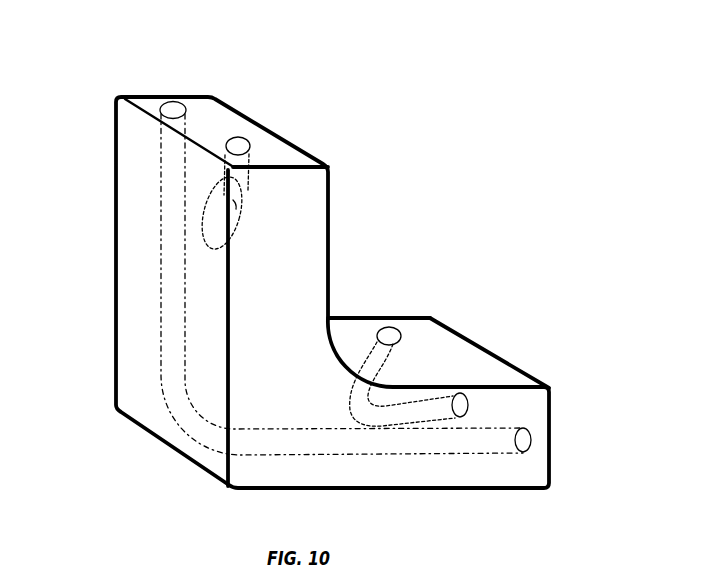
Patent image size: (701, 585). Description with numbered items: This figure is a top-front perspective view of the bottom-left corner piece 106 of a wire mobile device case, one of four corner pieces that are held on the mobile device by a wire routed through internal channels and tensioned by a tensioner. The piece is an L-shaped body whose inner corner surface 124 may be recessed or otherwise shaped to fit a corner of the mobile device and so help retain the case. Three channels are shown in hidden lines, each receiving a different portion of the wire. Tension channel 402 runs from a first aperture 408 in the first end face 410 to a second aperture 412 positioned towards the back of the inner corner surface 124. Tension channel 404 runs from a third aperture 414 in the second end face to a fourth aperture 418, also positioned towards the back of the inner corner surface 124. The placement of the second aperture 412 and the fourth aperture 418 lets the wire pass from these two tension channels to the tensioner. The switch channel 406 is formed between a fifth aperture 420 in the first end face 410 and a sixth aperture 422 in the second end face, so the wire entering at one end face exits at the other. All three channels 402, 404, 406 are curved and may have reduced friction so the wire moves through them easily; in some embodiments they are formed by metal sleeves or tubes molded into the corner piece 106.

The bottom-left corner piece 106 is at (142, 397).
The inner corner surface 124 is at (494, 360).
The tension channel 402 is at (250, 222).
The tension channel 404 is at (390, 357).
The switch channel 406 is at (153, 222).
The first aperture 408 is at (243, 126).
The first end face 410 is at (277, 150).
The second aperture 412 is at (252, 186).
The third aperture 414 is at (476, 406).
The fourth aperture 418 is at (391, 316).
The fifth aperture 420 is at (173, 92).
The sixth aperture 422 is at (543, 440).